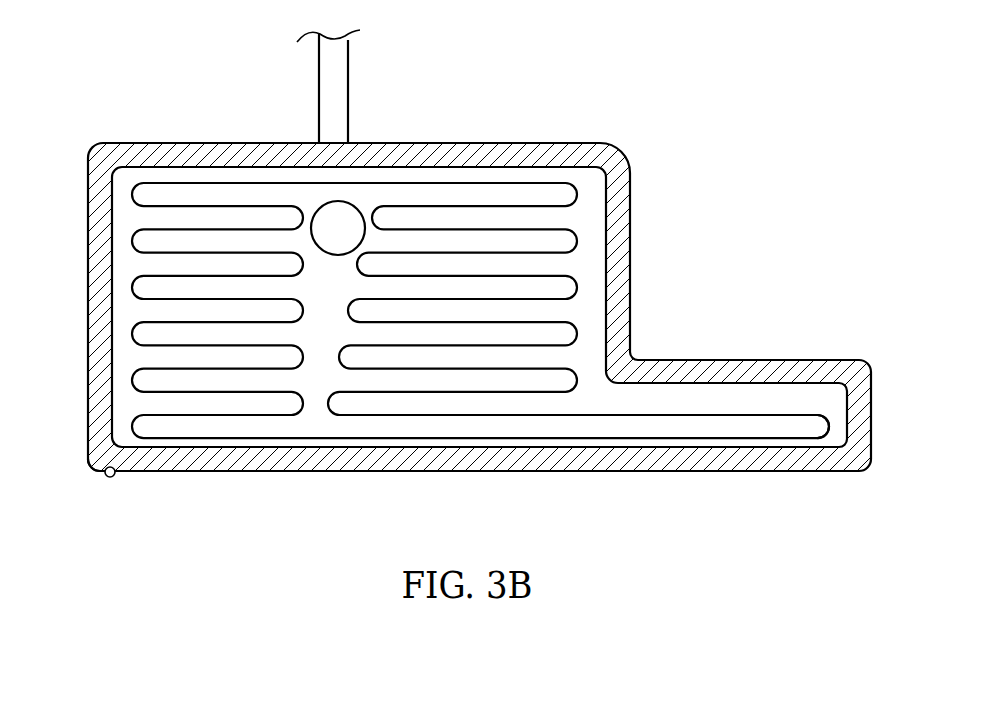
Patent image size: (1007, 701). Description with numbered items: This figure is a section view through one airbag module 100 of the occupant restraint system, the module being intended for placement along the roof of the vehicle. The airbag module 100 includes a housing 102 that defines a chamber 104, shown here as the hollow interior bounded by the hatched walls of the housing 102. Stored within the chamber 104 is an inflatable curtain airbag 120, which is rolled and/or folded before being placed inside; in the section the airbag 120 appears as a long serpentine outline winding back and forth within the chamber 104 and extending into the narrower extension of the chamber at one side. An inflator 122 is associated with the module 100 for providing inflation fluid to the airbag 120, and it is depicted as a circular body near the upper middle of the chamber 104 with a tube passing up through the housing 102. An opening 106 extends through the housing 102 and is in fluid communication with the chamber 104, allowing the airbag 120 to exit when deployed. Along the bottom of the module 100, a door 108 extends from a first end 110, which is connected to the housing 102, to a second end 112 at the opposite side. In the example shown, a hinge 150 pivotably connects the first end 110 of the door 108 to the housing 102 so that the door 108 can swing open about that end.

The airbag module 100 is at (690, 108).
The housing 102 is at (162, 155).
The chamber 104 is at (590, 299).
The opening 106 is at (828, 440).
The door 108 is at (477, 462).
The first end 110 is at (127, 482).
The second end 112 is at (847, 480).
The inflatable curtain airbag 120 is at (536, 182).
The inflator 122 is at (328, 243).
The hinge 150 is at (105, 477).